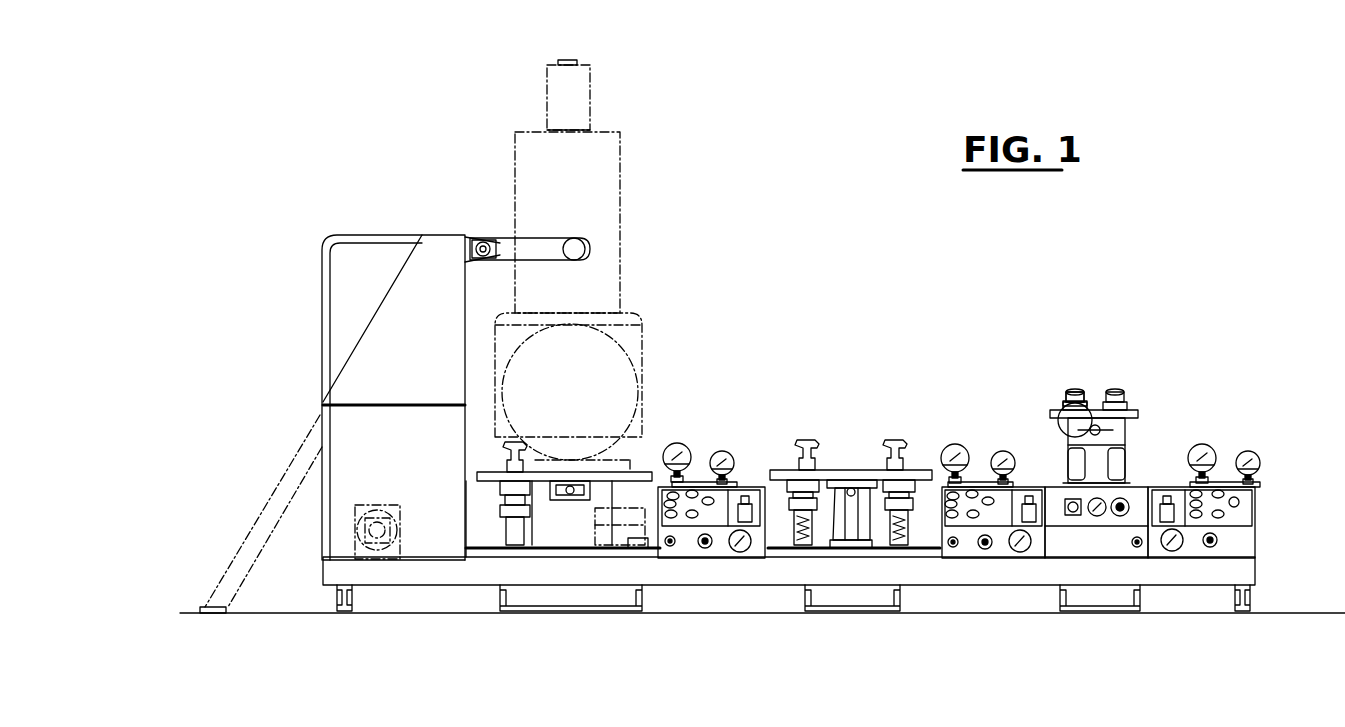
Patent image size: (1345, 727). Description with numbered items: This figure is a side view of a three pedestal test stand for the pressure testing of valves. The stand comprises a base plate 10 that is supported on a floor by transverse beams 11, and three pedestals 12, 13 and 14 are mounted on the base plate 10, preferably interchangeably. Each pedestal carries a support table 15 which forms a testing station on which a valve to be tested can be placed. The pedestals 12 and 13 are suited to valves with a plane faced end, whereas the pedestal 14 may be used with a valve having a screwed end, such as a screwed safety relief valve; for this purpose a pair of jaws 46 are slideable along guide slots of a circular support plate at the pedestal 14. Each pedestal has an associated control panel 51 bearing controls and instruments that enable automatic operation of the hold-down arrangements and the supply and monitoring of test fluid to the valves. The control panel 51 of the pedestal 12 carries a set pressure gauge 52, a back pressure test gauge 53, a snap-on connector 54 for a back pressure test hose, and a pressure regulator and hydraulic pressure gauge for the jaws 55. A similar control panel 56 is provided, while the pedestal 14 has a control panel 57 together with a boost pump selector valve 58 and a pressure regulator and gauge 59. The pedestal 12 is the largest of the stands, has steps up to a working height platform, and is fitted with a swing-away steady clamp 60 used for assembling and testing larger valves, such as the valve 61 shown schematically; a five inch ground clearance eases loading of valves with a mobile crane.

The base plate 10 is at (780, 570).
The transverse beams 11 is at (353, 598).
The pedestal 12 is at (644, 455).
The pedestal 13 is at (852, 468).
The pedestal 14 is at (1112, 379).
The support table 15 is at (1098, 410).
The jaws 46 is at (1072, 391).
The control panel 51 is at (728, 507).
The set pressure gauge 52 is at (681, 448).
The back pressure test gauge 53 is at (726, 455).
The snap-on connector 54 is at (670, 548).
The pressure regulator and hydraulic pressure gauge for the jaws 55 is at (706, 549).
The control panel 56 is at (980, 480).
The control panel 57 is at (1247, 510).
The boost pump selector valve 58 is at (1071, 516).
The pressure regulator and gauge 59 is at (1119, 517).
The swing-away steady clamp 60 is at (512, 243).
The valve 61 is at (632, 260).